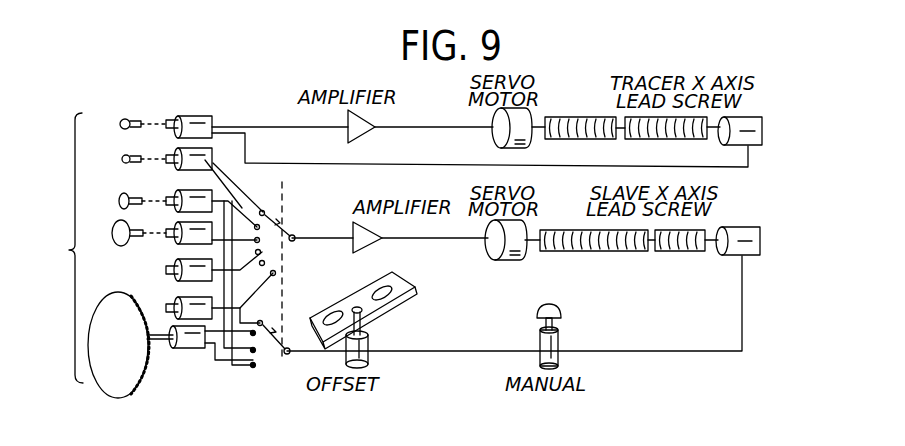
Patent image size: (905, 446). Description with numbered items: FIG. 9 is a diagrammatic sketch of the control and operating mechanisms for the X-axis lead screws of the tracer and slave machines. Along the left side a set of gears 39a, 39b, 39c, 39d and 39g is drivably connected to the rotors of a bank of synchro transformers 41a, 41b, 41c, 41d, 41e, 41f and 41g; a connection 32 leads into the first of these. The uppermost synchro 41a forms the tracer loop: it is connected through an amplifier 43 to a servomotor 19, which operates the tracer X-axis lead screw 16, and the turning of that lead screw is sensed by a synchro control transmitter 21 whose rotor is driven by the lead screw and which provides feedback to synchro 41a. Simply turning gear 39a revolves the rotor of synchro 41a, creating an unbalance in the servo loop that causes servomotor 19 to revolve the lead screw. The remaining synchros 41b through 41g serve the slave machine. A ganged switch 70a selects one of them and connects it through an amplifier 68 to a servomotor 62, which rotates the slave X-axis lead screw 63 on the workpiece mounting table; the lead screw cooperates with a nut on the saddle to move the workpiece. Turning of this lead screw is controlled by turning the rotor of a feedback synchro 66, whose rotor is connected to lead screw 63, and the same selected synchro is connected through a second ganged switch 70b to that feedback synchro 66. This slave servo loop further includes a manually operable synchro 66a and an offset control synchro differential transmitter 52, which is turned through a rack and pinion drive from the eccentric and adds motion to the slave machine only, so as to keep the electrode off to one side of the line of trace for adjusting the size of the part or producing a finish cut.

The input shaft / control connection 32 is at (165, 106).
The gear 39a is at (124, 118).
The gear 39b is at (121, 158).
The gear 39c is at (124, 199).
The gear 39d is at (113, 232).
The gear 39g is at (118, 388).
The synchro transformer 41a is at (222, 106).
The synchro transformer 41b is at (186, 150).
The synchro transformer 41c is at (186, 190).
The synchro transformer 41d is at (186, 222).
The synchro transformer 41e is at (186, 259).
The synchro transformer 41f is at (184, 297).
The synchro transformer 41g is at (180, 347).
The amplifier 43 is at (366, 134).
The servomotor 19 is at (497, 142).
The X-axis lead screw 16 is at (660, 140).
The synchro control transmitter 21 is at (764, 131).
The ganged switch 70a is at (283, 224).
The ganged switch 70b is at (283, 354).
The amplifier 68 is at (384, 234).
The servomotor 62 is at (518, 262).
The X-axis lead screw 63 is at (594, 252).
The synchro 66 is at (758, 238).
The synchro differential transmitter 52 is at (372, 346).
The manually operable synchro 66a is at (561, 350).